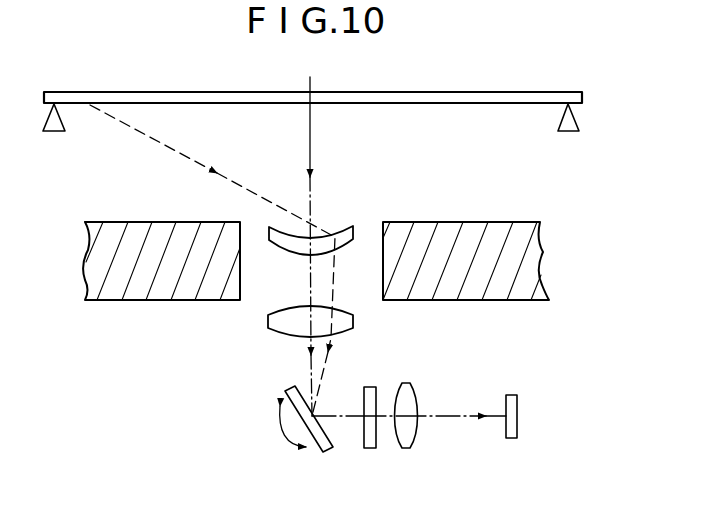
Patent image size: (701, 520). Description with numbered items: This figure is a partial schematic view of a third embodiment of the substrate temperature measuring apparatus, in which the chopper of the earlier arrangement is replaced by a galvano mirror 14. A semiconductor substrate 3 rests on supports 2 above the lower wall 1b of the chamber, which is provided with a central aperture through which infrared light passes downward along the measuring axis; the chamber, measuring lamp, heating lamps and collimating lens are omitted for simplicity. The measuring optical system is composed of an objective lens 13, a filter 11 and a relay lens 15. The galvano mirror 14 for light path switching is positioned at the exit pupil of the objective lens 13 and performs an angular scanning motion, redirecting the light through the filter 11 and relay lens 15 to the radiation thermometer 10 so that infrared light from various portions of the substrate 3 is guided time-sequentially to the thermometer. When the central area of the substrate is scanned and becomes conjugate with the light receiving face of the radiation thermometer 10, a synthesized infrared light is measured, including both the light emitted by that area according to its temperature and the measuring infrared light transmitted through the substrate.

The lower wall 1b is at (143, 293).
The support 2 is at (562, 117).
The semiconductor substrate 3 is at (480, 92).
The radiation thermometer 10 is at (513, 439).
The filter 11 is at (374, 449).
The objective lens 13 is at (362, 221).
The galvano mirror 14 is at (328, 452).
The relay lens 15 is at (410, 446).